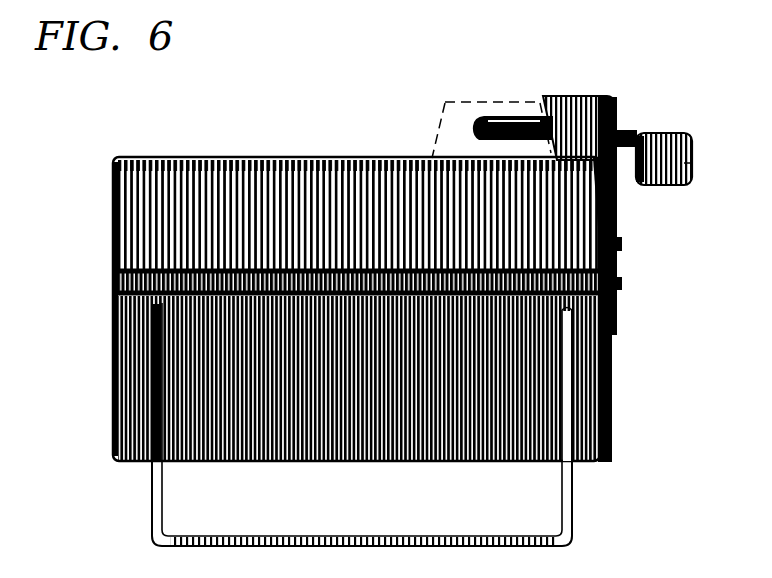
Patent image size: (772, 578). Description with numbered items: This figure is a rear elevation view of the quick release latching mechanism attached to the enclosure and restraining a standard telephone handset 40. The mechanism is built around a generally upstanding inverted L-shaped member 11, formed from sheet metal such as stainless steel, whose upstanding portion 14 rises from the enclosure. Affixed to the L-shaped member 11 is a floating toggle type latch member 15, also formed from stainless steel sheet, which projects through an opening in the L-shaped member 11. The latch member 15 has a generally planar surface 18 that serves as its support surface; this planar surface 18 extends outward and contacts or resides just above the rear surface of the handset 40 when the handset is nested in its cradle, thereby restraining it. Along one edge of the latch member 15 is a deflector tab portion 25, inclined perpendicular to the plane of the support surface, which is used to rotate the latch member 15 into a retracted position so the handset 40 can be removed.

The inverted L-shaped member 11 is at (618, 105).
The upstanding portion 14 is at (620, 213).
The floating toggle type latch member 15 is at (657, 133).
The planar surface 18 is at (508, 140).
The deflector tab portion 25 is at (690, 163).
The telephone handset 40 is at (445, 132).